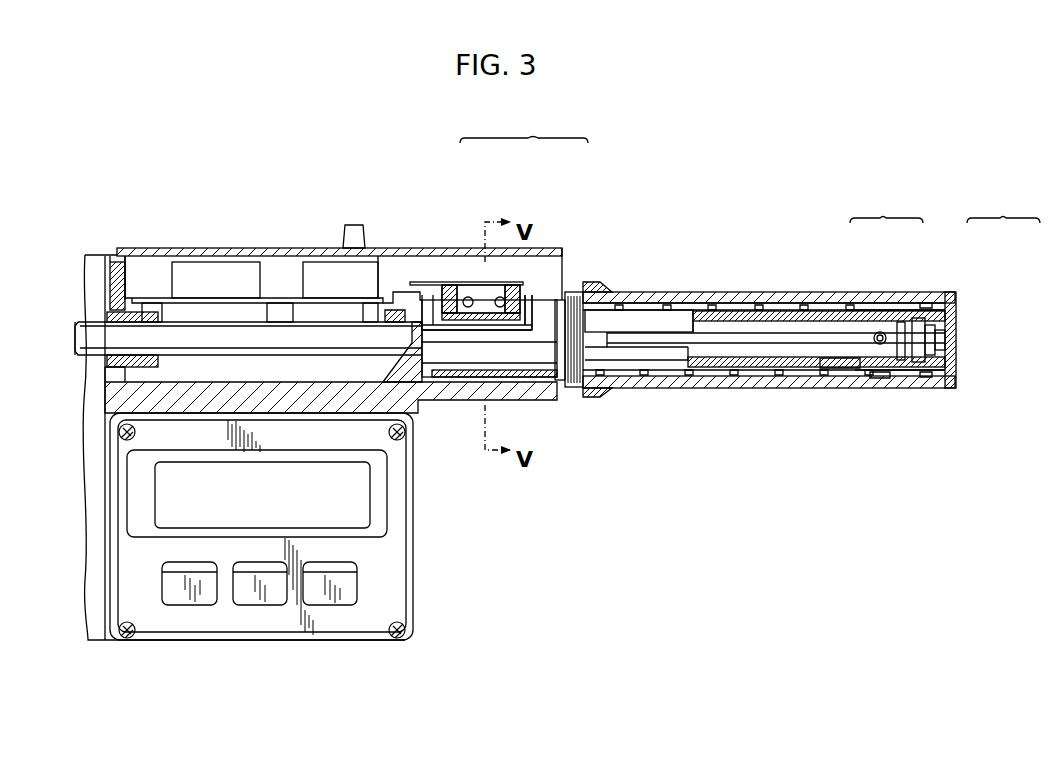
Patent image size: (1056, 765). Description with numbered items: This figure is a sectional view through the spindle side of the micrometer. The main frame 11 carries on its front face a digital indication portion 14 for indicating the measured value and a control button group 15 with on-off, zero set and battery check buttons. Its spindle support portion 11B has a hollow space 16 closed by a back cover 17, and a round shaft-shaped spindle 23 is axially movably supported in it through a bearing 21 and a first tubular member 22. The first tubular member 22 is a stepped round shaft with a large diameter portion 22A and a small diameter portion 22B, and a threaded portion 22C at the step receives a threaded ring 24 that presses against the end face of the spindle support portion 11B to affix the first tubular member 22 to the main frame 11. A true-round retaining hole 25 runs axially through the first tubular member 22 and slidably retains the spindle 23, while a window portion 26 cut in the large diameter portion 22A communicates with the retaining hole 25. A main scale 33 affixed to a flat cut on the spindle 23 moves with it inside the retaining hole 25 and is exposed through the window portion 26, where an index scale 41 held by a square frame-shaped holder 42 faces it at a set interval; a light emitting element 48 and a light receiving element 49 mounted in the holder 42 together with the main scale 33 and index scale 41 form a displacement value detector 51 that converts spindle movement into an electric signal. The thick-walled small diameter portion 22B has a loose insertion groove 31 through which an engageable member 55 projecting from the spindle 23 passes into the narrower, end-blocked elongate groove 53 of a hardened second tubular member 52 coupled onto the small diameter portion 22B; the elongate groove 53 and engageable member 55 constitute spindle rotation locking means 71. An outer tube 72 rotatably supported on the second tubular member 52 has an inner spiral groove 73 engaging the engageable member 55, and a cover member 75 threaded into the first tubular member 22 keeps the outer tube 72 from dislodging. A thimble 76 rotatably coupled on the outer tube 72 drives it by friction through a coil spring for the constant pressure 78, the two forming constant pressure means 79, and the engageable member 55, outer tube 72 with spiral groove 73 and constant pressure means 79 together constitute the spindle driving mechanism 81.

The main frame 11 is at (86, 446).
The spindle support portion 11B is at (340, 407).
The digital indication portion 14 is at (358, 500).
The control button group 15 is at (207, 597).
The hollow space 16 is at (396, 268).
The back cover 17 is at (283, 252).
The bearing 21 is at (102, 362).
The first tubular member 22 is at (683, 393).
The large diameter portion 22A is at (562, 388).
The small diameter portion 22B is at (816, 379).
The threaded portion 22C is at (585, 394).
The spindle 23 is at (213, 330).
The threaded ring 24 is at (598, 287).
The retaining hole 25 is at (880, 376).
The window portion 26 is at (558, 300).
The loose insertion groove 31 is at (842, 370).
The main scale 33 is at (531, 328).
The index scale 41 is at (459, 298).
The holder 42 is at (449, 294).
The light emitting element 48 is at (469, 298).
The light receiving element 49 is at (503, 298).
The displacement value detector 51 is at (499, 222).
The second tubular member 52 is at (698, 310).
The elongate groove 53 is at (650, 335).
The engageable member 55 is at (887, 293).
The spindle rotation locking means 71 is at (887, 267).
The outer tube 72 is at (760, 297).
The spiral groove 73 is at (628, 297).
The cover member 75 is at (958, 318).
The thimble 76 is at (915, 296).
The coil spring for the constant pressure 78 is at (926, 296).
The constant pressure means 79 is at (971, 285).
The spindle driving mechanism 81 is at (944, 206).